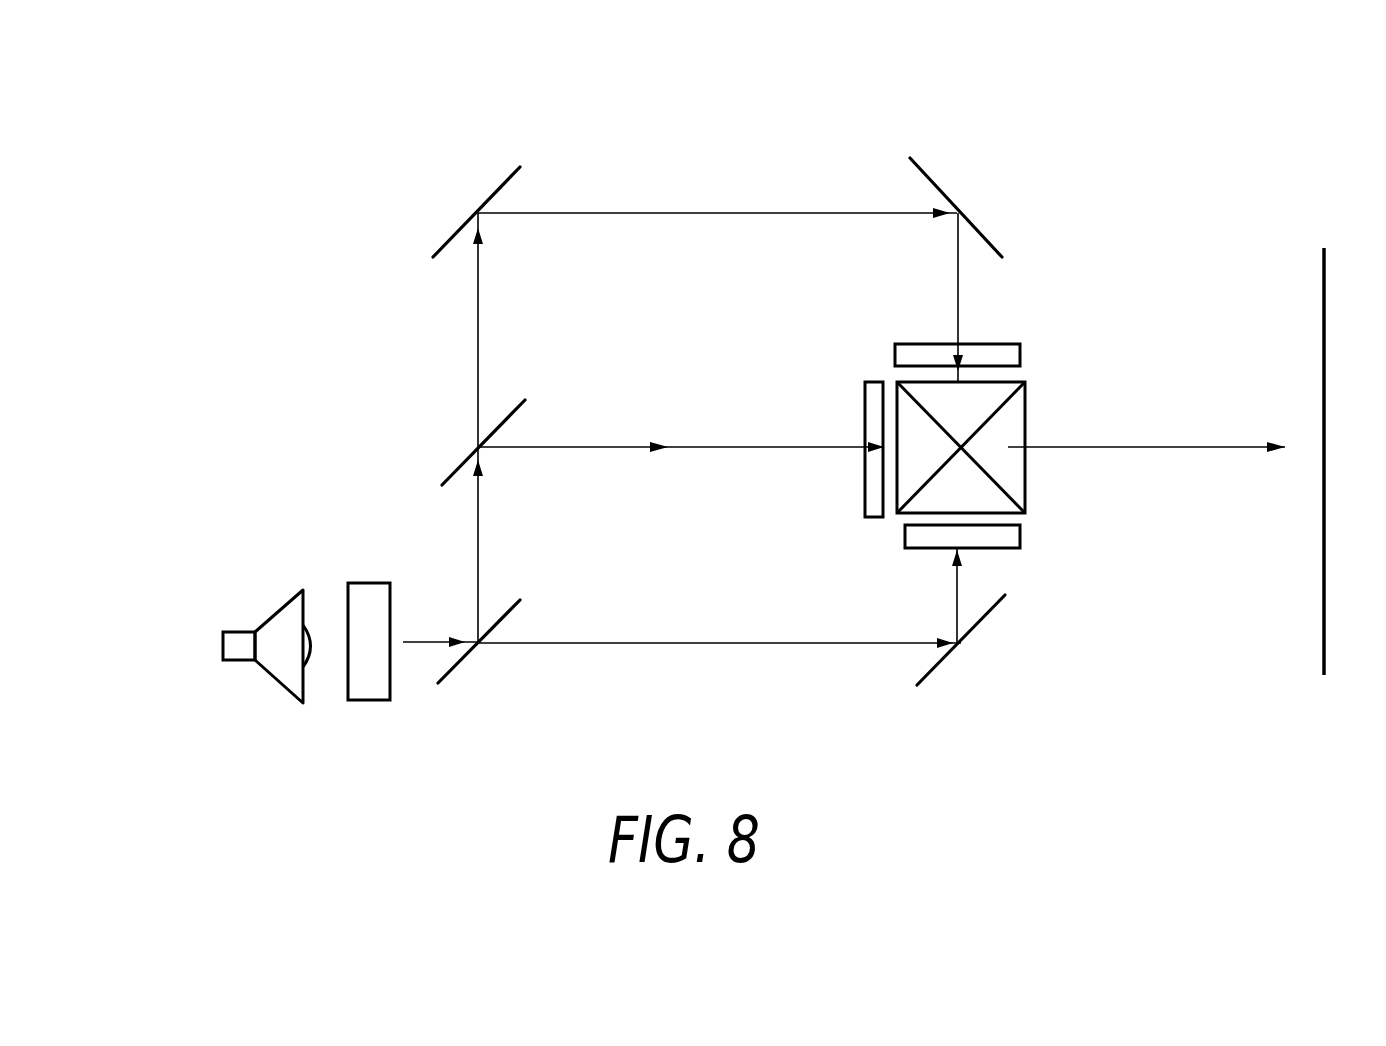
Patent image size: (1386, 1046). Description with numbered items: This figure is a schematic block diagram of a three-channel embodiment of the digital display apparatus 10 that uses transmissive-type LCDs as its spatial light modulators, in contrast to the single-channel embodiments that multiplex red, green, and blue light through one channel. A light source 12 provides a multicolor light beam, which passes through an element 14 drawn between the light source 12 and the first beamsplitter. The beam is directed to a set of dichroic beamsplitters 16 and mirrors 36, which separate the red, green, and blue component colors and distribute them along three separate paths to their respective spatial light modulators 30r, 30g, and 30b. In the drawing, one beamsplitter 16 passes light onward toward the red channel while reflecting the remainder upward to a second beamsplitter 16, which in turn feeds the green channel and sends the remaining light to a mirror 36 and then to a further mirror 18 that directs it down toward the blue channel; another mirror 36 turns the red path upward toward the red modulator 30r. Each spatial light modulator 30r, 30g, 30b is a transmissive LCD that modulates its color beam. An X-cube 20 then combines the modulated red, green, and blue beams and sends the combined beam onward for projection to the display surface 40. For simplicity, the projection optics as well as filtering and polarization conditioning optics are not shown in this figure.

The digital display apparatus 10 is at (352, 178).
The light source 12 is at (280, 678).
The collimating lens / filter 14 is at (377, 702).
The dichroic beamsplitter 16 is at (467, 660).
The mirror 18 is at (980, 230).
The X-cube 20 is at (1027, 420).
The spatial light modulator 30b is at (910, 342).
The spatial light modulator 30g is at (862, 482).
The spatial light modulator 30r is at (903, 535).
The mirror 36 is at (500, 183).
The display surface 40 is at (1324, 629).